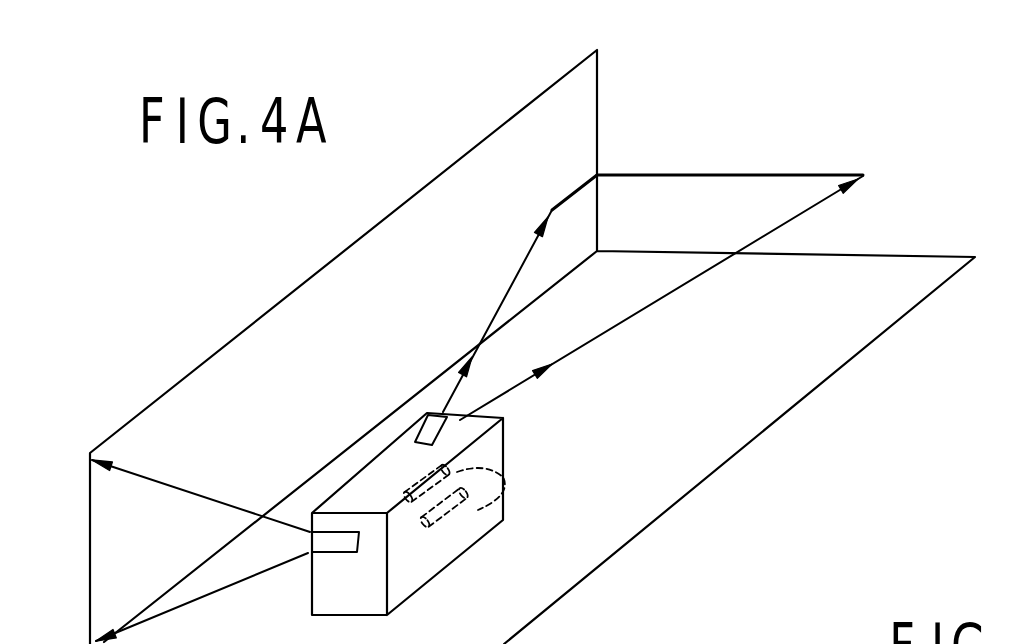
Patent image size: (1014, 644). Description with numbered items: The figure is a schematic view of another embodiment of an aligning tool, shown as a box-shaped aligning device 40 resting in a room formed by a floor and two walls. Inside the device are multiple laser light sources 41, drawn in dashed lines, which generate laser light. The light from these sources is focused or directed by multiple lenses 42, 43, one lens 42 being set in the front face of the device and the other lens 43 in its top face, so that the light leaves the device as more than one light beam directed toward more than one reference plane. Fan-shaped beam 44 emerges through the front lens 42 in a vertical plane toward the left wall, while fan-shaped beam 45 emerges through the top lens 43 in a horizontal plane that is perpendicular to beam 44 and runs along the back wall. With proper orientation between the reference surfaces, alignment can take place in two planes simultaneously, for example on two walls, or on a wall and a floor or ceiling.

The aligning device 40 is at (462, 557).
The laser light sources 41 is at (512, 480).
The lens 42 is at (328, 554).
The lens 43 is at (458, 419).
The fan-shaped beam 44 is at (297, 527).
The fan-shaped beam 45 is at (690, 280).